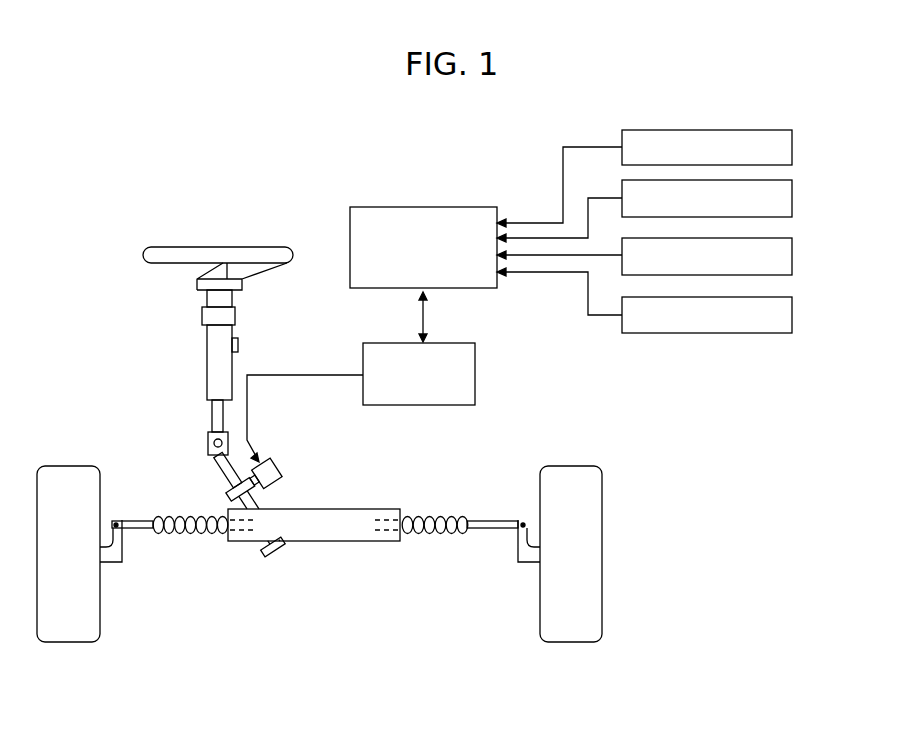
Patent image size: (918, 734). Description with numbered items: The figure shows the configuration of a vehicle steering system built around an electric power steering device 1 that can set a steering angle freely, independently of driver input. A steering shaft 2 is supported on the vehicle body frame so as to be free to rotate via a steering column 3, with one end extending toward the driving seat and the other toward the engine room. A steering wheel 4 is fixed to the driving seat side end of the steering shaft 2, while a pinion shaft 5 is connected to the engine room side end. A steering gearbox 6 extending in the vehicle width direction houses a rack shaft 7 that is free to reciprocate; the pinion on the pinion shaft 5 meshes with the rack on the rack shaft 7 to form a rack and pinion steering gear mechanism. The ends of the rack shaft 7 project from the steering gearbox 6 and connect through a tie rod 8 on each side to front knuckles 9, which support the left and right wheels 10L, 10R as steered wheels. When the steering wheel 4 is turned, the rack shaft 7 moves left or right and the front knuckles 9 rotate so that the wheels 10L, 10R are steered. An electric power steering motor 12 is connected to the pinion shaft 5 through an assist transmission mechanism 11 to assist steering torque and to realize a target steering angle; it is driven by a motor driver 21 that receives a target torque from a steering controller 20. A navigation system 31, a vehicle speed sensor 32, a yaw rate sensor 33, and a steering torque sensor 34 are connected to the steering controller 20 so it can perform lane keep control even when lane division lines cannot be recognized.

The electric power steering device 1 is at (120, 393).
The steering shaft 2 is at (212, 425).
The steering column 3 is at (207, 364).
The steering wheel 4 is at (222, 247).
The pinion shaft 5 is at (221, 473).
The steering gearbox 6 is at (343, 541).
The rack shaft 7 is at (383, 509).
The tie rod 8 is at (143, 530).
The front knuckle 9 is at (113, 562).
The right wheel 10R is at (68, 642).
The left wheel 10L is at (570, 642).
The assist transmission mechanism 11 is at (225, 498).
The electric power steering motor 12 is at (283, 478).
The steering controller 20 is at (426, 207).
The motor driver 21 is at (456, 343).
The navigation system 31 is at (792, 147).
The vehicle speed sensor 32 is at (792, 198).
The yaw rate sensor 33 is at (792, 256).
The steering torque sensor 34 is at (792, 315).